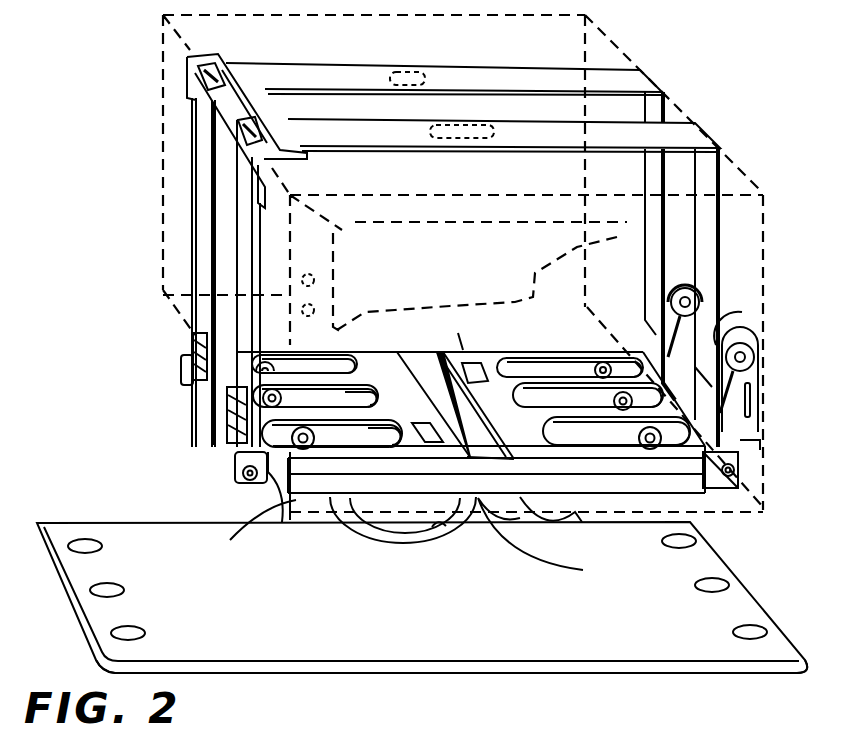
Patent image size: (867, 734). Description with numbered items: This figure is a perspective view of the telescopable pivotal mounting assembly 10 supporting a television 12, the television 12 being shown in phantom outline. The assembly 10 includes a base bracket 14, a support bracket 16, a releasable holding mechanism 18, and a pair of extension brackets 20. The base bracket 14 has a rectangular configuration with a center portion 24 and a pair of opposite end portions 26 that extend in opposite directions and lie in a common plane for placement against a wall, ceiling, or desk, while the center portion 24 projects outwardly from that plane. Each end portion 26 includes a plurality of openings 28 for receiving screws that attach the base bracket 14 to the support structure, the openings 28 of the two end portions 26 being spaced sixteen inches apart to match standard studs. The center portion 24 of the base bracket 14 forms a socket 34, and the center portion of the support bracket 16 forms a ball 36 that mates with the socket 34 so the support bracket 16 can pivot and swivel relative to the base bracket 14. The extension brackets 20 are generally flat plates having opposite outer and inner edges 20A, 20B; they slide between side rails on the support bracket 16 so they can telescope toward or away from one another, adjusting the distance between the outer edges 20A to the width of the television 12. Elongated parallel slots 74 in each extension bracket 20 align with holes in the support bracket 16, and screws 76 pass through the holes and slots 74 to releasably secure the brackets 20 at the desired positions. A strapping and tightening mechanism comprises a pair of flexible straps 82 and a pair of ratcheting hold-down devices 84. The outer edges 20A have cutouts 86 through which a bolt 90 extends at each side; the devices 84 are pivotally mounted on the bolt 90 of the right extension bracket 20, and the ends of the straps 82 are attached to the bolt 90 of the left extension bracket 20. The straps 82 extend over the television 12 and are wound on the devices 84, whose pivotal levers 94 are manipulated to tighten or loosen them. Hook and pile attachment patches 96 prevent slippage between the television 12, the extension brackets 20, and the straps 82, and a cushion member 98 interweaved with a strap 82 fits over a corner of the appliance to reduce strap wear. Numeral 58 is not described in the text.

The telescopable pivotal mounting assembly 10 is at (125, 388).
The television 12 is at (162, 203).
The base bracket 14 is at (455, 671).
The support bracket 16 is at (617, 508).
The releasable holding mechanism 18 is at (538, 512).
The extension brackets 20 is at (364, 347).
The outer edges 20A is at (295, 512).
The inner edges 20B is at (390, 351).
The center portion 24 is at (294, 507).
The opposite end portions 26 is at (200, 654).
The openings 28 is at (133, 625).
The socket 34 is at (441, 528).
The ball 36 is at (395, 525).
The latch bracket 58 is at (575, 523).
The elongated parallel slots 74 is at (365, 395).
The screws 76 is at (306, 437).
The flexible straps 82 is at (500, 130).
The ratcheting hold-down devices 84 is at (684, 254).
The cutouts 86 is at (250, 432).
The bolt 90 is at (243, 475).
The pivotal levers 94 is at (752, 447).
The hook and pile attachment patches 96 is at (372, 88).
The cushion members 98 is at (243, 63).